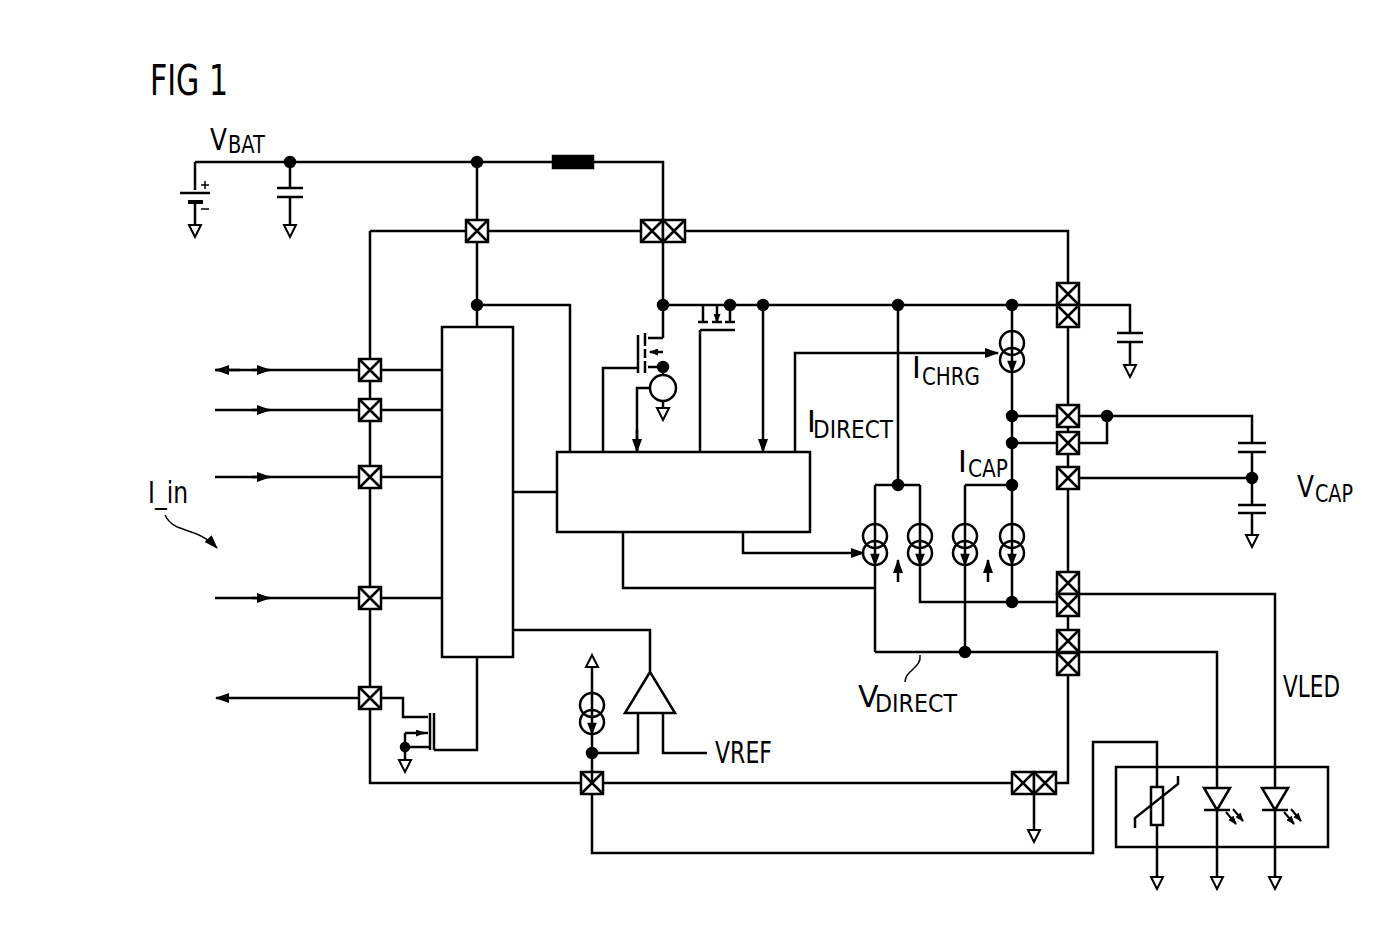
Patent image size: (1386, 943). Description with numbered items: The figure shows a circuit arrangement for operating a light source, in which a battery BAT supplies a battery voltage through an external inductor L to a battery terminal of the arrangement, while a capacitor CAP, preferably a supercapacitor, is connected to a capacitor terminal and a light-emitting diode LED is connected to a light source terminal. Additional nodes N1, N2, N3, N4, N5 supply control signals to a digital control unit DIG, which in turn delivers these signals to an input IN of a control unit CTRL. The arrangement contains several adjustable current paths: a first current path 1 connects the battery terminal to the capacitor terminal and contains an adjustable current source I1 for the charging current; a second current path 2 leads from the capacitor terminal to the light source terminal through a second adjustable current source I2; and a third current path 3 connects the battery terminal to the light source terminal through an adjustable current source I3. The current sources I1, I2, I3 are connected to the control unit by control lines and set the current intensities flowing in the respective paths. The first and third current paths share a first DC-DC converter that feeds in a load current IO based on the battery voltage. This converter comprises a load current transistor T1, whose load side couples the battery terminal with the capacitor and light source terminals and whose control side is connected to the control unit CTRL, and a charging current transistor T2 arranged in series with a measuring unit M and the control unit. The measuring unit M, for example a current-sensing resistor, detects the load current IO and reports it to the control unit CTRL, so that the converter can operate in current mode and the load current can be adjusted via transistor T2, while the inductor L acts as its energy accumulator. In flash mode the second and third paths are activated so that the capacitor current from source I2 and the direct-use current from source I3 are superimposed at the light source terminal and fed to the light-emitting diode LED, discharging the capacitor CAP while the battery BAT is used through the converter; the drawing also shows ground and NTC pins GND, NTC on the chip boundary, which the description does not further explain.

The first adjustable current path 1 is at (897, 305).
The second adjustable current path 2 is at (1013, 497).
The third adjustable current path 3 is at (900, 425).
The inductor L is at (575, 156).
The measuring unit M is at (672, 377).
The load current transistor T1 is at (725, 338).
The charging current transistor T2 is at (637, 352).
The adjustable current source I1 is at (1000, 352).
The second adjustable current source I2 is at (997, 578).
The adjustable current source I3 is at (898, 582).
The load current IO is at (744, 305).
The node N1 is at (358, 378).
The node N2 is at (358, 418).
The node N3 is at (358, 485).
The node N4 is at (358, 607).
The node N5 is at (358, 707).
The battery BAT is at (185, 190).
The capacitor CAP is at (1280, 472).
The light-emitting diode LED is at (1190, 765).
The ground pin GND is at (1015, 807).
The NTC thermistor pin NTC is at (835, 741).
The control unit CTRL is at (683, 492).
The digital control unit DIG is at (477, 492).
The input IN is at (548, 490).